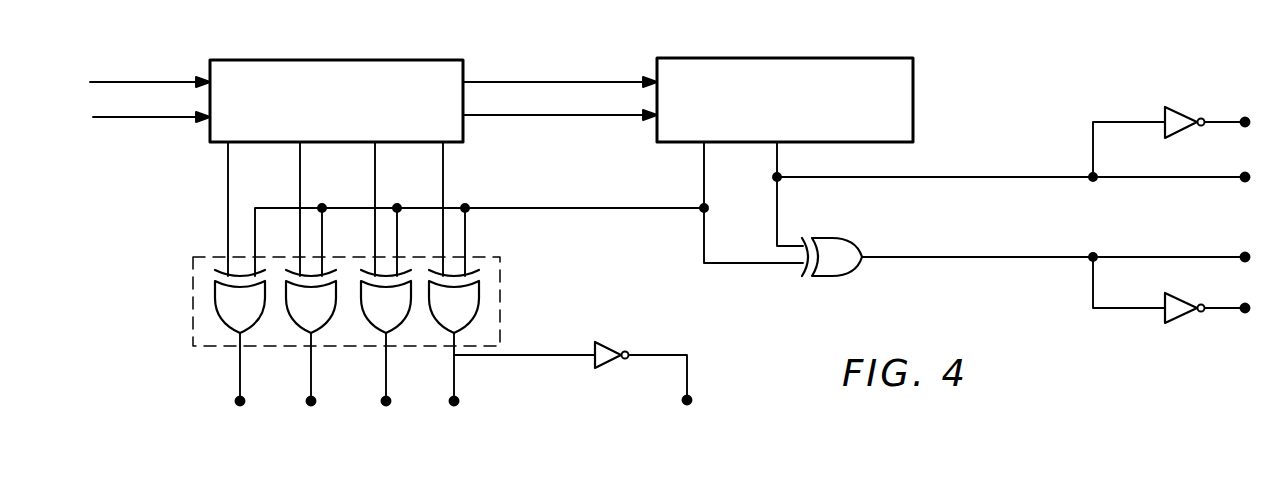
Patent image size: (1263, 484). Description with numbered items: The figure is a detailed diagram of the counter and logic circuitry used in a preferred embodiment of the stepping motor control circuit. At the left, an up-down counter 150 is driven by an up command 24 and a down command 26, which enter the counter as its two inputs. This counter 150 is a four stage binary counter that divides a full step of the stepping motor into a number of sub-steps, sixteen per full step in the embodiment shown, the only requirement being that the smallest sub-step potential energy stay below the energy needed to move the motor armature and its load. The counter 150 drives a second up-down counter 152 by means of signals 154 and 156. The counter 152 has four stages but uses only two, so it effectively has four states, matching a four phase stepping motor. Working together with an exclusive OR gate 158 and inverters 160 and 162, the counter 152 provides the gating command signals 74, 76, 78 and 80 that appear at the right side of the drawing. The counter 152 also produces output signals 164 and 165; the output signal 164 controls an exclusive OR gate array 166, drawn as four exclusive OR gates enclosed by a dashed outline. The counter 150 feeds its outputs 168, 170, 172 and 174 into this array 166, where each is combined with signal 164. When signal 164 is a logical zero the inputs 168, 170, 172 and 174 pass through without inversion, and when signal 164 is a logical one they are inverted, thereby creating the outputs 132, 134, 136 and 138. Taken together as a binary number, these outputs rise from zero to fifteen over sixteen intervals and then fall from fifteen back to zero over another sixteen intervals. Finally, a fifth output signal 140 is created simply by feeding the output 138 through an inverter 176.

The up command 24 is at (120, 82).
The down command 26 is at (123, 117).
The up-down counter 150 is at (343, 60).
The second up-down counter 152 is at (767, 58).
The signal 154 is at (533, 82).
The signal 156 is at (533, 115).
The exclusive OR gate 158 is at (851, 274).
The inverter 160 is at (1176, 107).
The inverter 162 is at (1173, 323).
The output signal 164 is at (683, 208).
The output 165 is at (777, 155).
The exclusive OR gate array 166 is at (500, 320).
The output 168 is at (228, 194).
The output 170 is at (300, 153).
The output 172 is at (375, 157).
The output 174 is at (443, 155).
The inverter 176 is at (605, 342).
The output 132 is at (240, 401).
The output 134 is at (311, 401).
The output 136 is at (386, 401).
The output 138 is at (454, 401).
The fifth output signal 140 is at (687, 397).
The gating command signal 74 is at (1233, 308).
The gating command signal 76 is at (1175, 257).
The gating command signal 78 is at (1165, 177).
The gating command signal 80 is at (1226, 122).